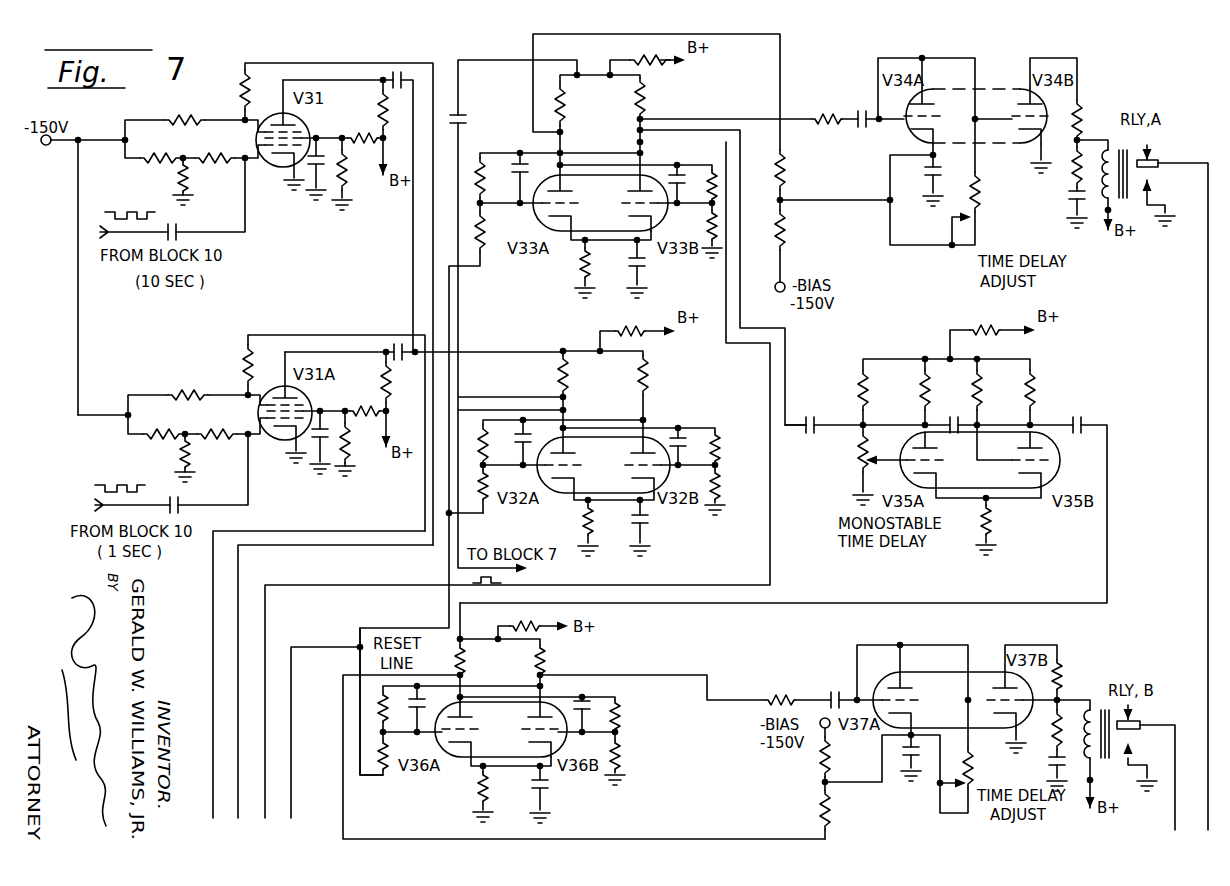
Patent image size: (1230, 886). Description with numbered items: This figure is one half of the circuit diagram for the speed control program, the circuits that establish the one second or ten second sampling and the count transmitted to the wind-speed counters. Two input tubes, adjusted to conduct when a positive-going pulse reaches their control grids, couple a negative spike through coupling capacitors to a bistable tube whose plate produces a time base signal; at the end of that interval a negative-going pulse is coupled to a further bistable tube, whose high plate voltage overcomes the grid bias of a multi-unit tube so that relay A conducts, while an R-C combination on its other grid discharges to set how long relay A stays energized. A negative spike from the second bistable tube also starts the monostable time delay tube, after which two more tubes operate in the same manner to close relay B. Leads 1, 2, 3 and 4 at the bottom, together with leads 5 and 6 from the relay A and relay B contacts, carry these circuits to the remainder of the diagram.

The lead 1 (V31A plate output line) 1 is at (317, 685).
The lead 2 (V31 plate output line) 2 is at (333, 692).
The lead 3 (V33B plate output line) 3 is at (515, 491).
The lead 4 (reset line) 4 is at (323, 743).
The lead 5 (relay B contact) 5 is at (1160, 786).
The lead 6 (relay A contact) 6 is at (1186, 505).